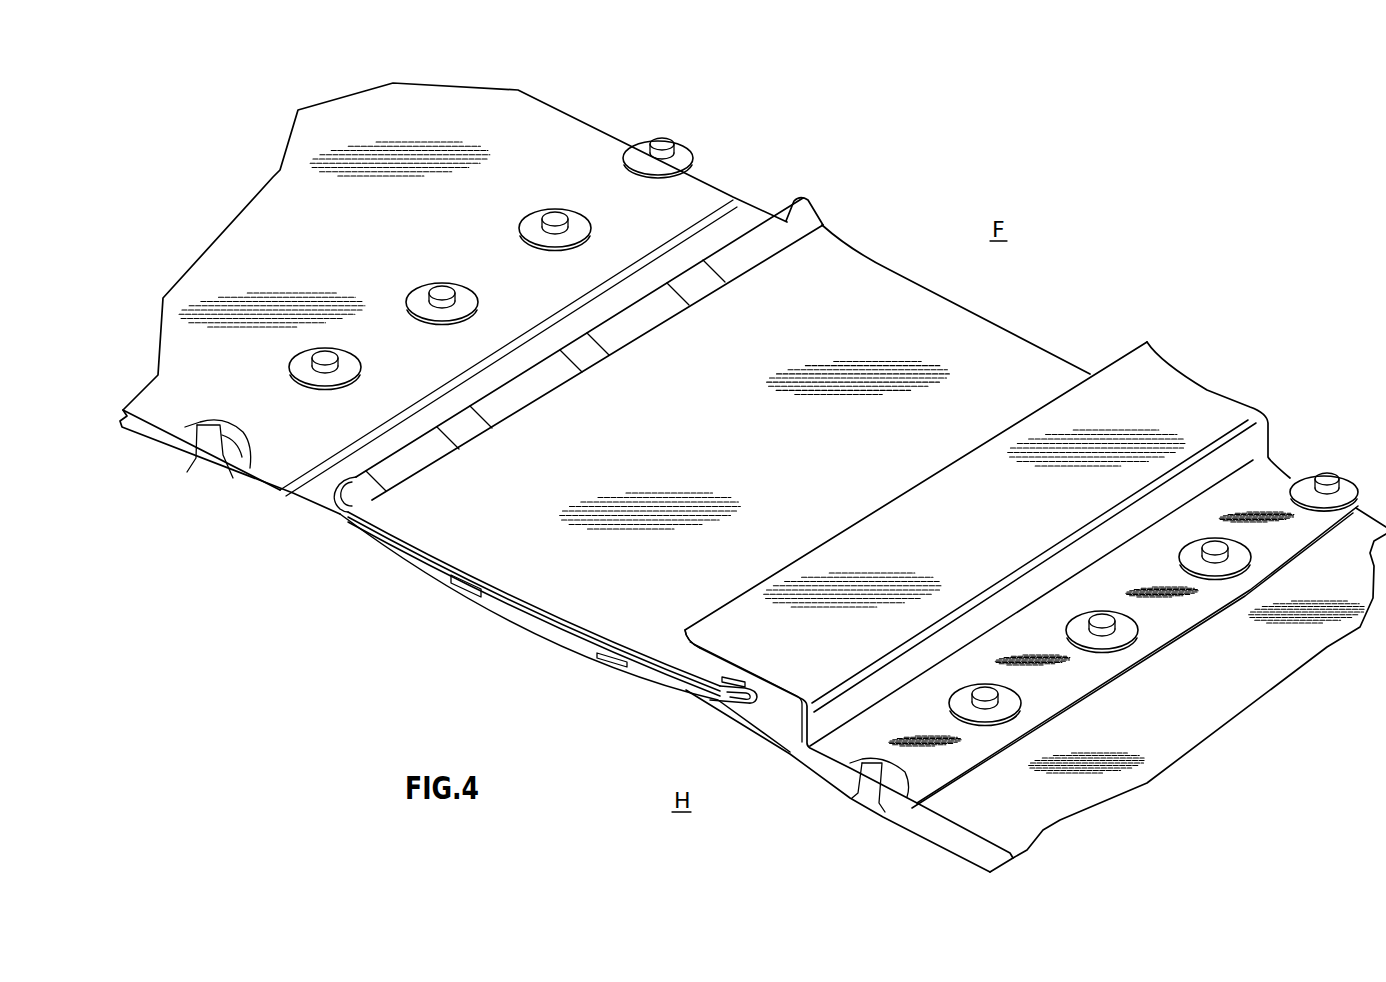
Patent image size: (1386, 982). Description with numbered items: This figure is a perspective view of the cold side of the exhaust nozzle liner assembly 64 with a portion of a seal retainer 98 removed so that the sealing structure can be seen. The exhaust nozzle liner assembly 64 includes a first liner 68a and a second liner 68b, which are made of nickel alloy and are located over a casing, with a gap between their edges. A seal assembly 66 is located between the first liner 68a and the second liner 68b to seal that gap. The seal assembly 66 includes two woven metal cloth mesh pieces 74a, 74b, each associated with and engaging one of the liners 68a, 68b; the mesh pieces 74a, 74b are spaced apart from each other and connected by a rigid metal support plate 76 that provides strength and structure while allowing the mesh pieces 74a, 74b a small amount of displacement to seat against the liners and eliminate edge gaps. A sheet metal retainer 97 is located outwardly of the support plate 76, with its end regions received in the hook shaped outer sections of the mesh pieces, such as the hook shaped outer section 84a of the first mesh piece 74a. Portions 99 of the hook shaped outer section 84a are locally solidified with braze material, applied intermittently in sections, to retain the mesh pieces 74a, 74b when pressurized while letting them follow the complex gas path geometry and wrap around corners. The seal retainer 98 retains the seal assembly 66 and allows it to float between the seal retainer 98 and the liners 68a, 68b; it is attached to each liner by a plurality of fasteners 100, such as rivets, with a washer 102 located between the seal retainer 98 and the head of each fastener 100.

The exhaust nozzle liner assembly 64 is at (936, 175).
The seal assembly 66 is at (398, 609).
The first liner 68a is at (520, 127).
The second liner 68b is at (803, 767).
The woven metal cloth mesh piece 74a is at (408, 562).
The woven metal cloth mesh piece 74b is at (647, 680).
The support plate 76 is at (522, 613).
The hook shaped outer section 84a is at (750, 240).
The retainer 97 is at (507, 570).
The seal retainer 98 is at (744, 641).
The portions of the hook shaped outer sections 99 is at (690, 280).
The fastener 100 is at (200, 457).
The washer 102 is at (247, 468).